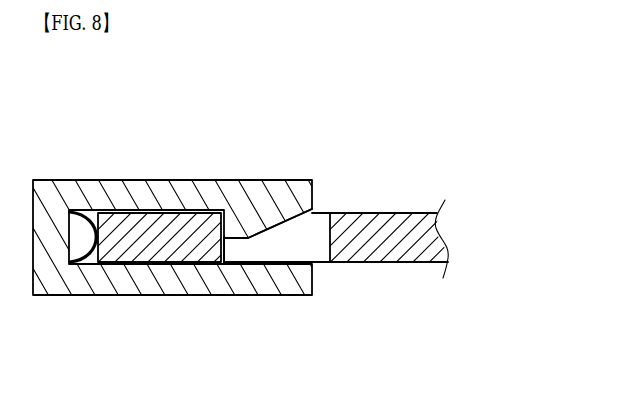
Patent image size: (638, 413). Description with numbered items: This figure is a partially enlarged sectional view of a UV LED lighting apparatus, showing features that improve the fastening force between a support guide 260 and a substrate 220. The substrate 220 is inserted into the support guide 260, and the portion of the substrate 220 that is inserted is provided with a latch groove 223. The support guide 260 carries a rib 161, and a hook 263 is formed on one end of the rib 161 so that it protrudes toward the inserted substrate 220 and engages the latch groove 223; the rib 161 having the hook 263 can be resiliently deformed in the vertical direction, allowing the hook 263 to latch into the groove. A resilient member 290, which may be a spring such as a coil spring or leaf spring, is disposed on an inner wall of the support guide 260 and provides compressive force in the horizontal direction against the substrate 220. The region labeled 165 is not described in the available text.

The support guide 260 is at (237, 84).
The spring receiving cavity 165 is at (91, 217).
The rib 161 is at (171, 195).
The hook 263 is at (244, 228).
The latch groove 223 is at (310, 233).
The substrate 220 is at (388, 196).
The resilient member 290 is at (83, 262).